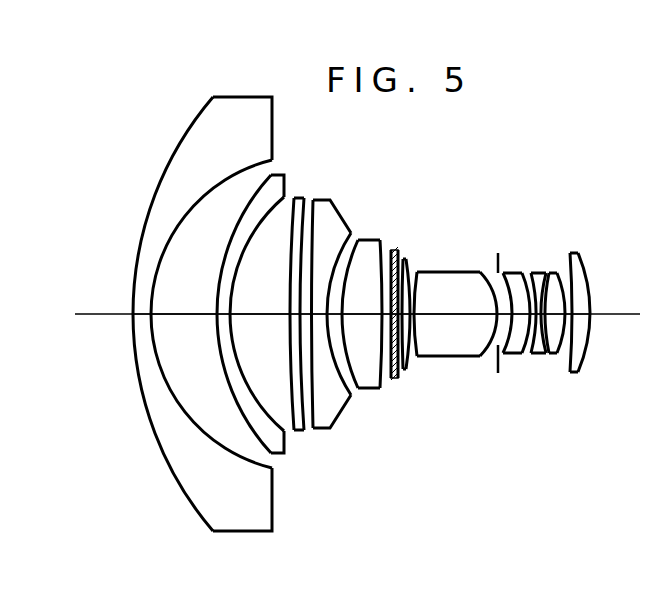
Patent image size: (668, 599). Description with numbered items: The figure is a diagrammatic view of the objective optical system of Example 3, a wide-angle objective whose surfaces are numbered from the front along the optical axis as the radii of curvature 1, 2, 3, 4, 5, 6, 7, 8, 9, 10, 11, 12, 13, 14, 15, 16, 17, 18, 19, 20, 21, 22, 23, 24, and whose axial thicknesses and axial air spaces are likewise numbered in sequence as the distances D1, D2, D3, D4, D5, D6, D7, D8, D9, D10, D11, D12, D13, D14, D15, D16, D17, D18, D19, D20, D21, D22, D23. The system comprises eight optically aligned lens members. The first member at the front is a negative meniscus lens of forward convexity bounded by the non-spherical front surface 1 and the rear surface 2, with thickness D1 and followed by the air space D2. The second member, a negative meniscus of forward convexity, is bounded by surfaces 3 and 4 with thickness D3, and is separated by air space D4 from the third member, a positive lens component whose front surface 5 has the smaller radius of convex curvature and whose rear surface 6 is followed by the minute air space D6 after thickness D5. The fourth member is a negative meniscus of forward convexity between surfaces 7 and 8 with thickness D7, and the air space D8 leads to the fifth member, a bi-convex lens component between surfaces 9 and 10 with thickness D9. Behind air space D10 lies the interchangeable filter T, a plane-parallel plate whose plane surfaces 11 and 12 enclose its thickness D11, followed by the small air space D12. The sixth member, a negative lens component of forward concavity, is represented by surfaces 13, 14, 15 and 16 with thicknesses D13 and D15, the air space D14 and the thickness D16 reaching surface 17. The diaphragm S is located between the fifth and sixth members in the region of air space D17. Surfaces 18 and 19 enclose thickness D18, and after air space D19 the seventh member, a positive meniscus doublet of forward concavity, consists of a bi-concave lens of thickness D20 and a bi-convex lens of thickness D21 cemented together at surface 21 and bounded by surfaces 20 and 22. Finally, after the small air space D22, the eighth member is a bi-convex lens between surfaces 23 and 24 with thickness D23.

The lens surface R1 1 is at (157, 447).
The lens surface R2 2 is at (179, 399).
The lens surface R3 3 is at (254, 432).
The lens surface R4 4 is at (283, 448).
The lens surface R5 5 is at (297, 432).
The lens surface R6 6 is at (303, 432).
The lens surface R7 7 is at (313, 430).
The lens surface R8 8 is at (349, 400).
The lens surface R9 9 is at (359, 390).
The lens surface R10 10 is at (381, 390).
The filter surface R11 11 is at (391, 380).
The filter surface R12 12 is at (398, 380).
The lens surface R13 13 is at (404, 371).
The lens surface R14 14 is at (408, 371).
The lens surface R15 15 is at (418, 358).
The lens surface R16 16 is at (481, 358).
The lens surface R17 17 is at (503, 355).
The lens surface R18 18 is at (519, 355).
The lens surface R19 19 is at (532, 355).
The lens surface R20 20 is at (545, 355).
The lens surface R21 21 is at (550, 355).
The lens surface R22 22 is at (557, 355).
The lens surface R23 23 is at (571, 374).
The lens surface R24 24 is at (582, 364).
The interchangeable filter T is at (396, 249).
The diaphragm S is at (498, 252).
The axial thickness D1 is at (138, 313).
The axial air space D2 is at (192, 313).
The axial thickness D3 is at (214, 310).
The axial air space D4 is at (247, 313).
The axial thickness D5 is at (277, 313).
The axial air space D6 is at (297, 232).
The axial thickness D7 is at (330, 263).
The axial air space D8 is at (344, 282).
The axial thickness D9 is at (350, 300).
The axial air space D10 is at (386, 262).
The filter thickness D11 is at (395, 248).
The axial air space D12 is at (400, 276).
The axial thickness D13 is at (408, 286).
The axial air space D14 is at (414, 284).
The axial thickness D15 is at (447, 290).
The axial thickness D16 is at (483, 313).
The axial air space D17 is at (505, 298).
The axial thickness D18 is at (518, 296).
The axial air space D19 is at (533, 292).
The axial thickness D20 is at (539, 292).
The axial thickness D21 is at (553, 296).
The axial air space D22 is at (568, 296).
The axial thickness D23 is at (580, 292).